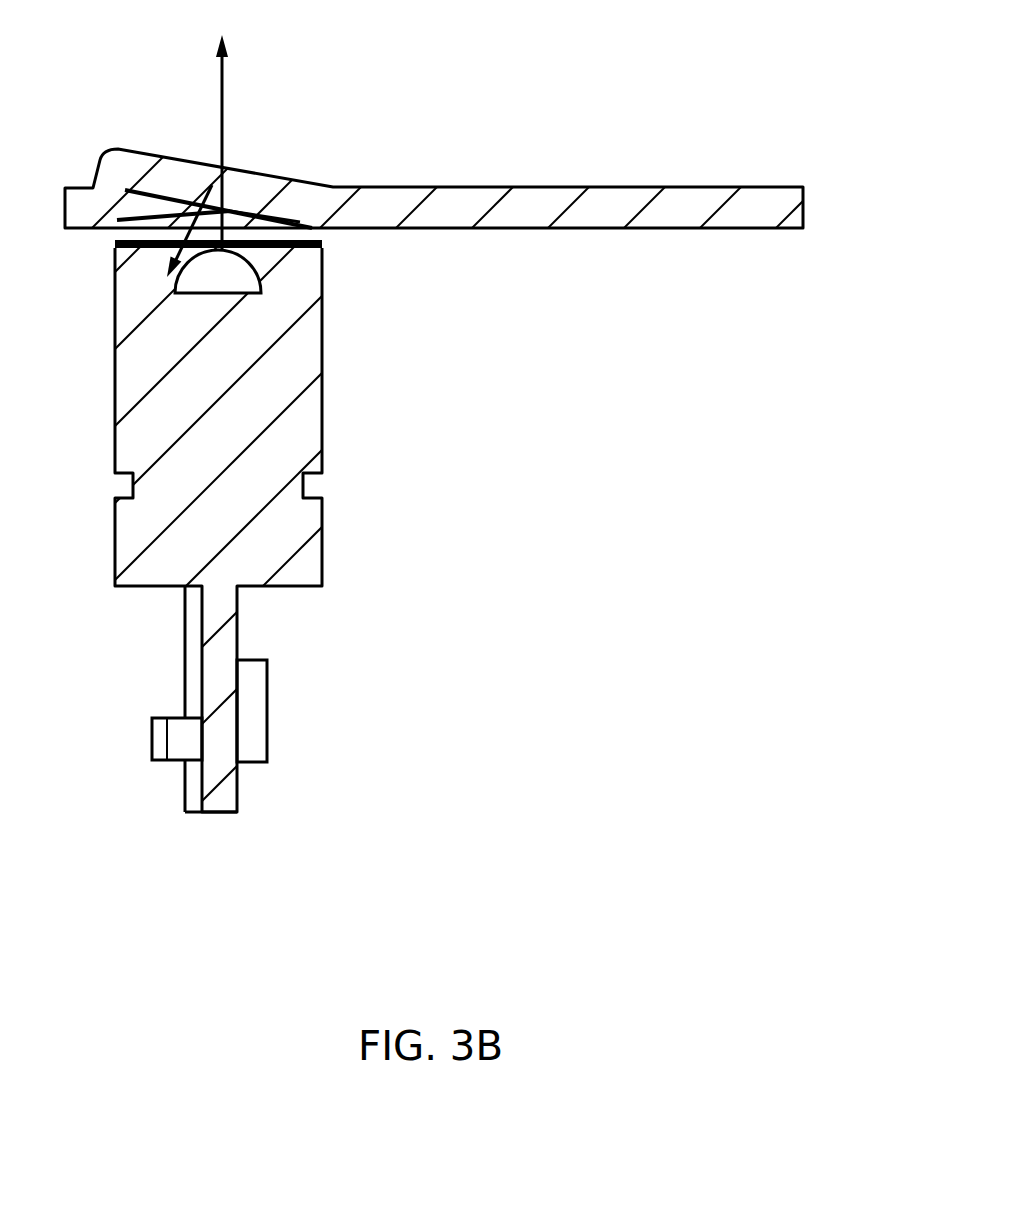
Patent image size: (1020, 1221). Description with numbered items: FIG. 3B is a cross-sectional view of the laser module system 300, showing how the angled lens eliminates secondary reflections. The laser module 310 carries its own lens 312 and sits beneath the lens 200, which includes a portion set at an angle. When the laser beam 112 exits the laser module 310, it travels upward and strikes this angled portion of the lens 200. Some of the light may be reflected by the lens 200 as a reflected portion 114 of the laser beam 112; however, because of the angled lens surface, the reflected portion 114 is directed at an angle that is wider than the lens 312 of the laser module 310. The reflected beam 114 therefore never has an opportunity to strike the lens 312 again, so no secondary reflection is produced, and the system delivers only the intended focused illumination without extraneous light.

The optical module assembly 300 is at (432, 414).
The lens 200 is at (390, 195).
The laser module 310 is at (308, 422).
The lens of the laser module 312 is at (258, 275).
The laser beam 112 is at (222, 125).
The reflected portion of the laser beam 114 is at (232, 214).